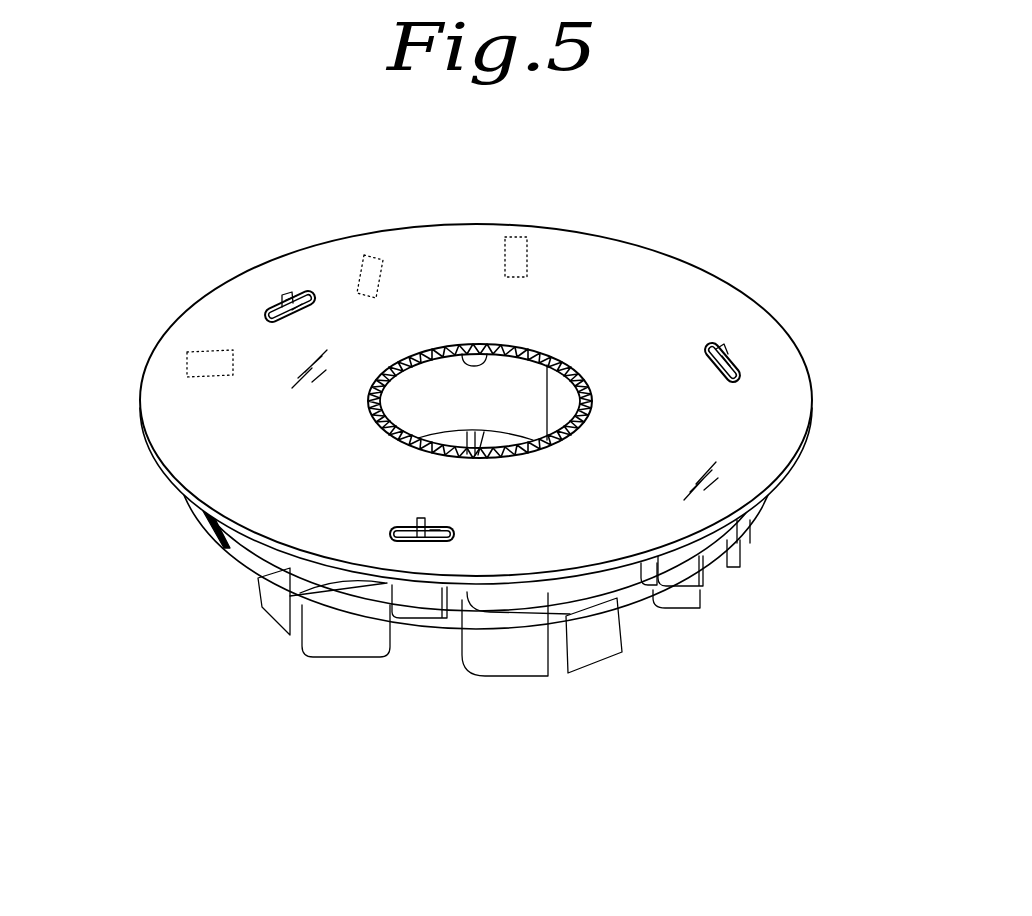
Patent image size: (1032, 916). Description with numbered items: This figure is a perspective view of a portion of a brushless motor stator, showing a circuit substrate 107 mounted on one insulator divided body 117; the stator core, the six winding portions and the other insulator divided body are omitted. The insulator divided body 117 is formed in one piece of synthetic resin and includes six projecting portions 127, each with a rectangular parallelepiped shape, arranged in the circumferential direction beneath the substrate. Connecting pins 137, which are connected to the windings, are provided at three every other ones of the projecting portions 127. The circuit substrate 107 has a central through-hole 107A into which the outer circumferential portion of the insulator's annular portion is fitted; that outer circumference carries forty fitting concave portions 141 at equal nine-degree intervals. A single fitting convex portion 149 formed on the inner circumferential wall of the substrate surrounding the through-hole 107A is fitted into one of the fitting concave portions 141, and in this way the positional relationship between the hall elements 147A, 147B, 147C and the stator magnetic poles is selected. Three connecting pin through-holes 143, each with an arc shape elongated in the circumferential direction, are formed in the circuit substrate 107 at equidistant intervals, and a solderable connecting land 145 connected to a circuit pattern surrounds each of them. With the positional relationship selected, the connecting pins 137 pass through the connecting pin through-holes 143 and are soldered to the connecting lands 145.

The circuit substrate 107 is at (639, 233).
The through-hole 107A is at (490, 344).
The insulator divided body 117 is at (230, 562).
The projecting portions 127 is at (682, 562).
The connecting pins 137 is at (284, 290).
The fitting concave portions 141 is at (422, 348).
The connecting pin through-holes 143 is at (265, 310).
The connecting land 145 is at (275, 302).
The hall element 147A is at (517, 226).
The hall element 147B is at (365, 233).
The hall element 147C is at (187, 358).
The fitting convex portion 149 is at (475, 456).